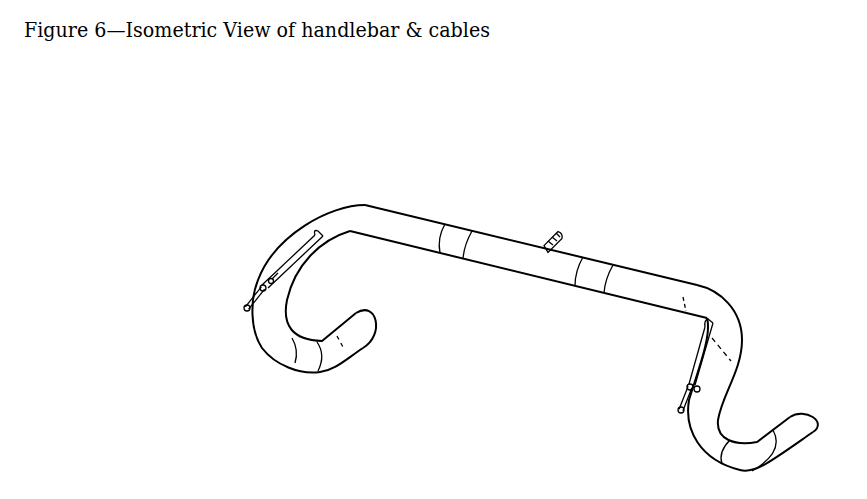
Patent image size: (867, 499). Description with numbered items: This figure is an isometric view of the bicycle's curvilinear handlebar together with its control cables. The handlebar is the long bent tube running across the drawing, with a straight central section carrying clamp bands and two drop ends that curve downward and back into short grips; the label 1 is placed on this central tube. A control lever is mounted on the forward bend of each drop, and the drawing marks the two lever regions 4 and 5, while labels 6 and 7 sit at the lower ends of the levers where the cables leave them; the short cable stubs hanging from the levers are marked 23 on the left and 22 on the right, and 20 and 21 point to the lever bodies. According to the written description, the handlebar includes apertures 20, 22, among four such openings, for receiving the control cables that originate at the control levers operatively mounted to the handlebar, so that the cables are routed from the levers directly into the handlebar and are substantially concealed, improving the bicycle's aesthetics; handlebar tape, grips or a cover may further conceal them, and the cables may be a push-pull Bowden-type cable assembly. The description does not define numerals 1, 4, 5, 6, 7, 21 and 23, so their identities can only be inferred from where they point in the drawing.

The handlebar 1 is at (396, 201).
The first brake lever 4 is at (311, 210).
The second brake lever 5 is at (701, 307).
The first lever pivot 6 is at (245, 284).
The second lever pivot 7 is at (711, 381).
The aperture 20 is at (281, 250).
The second cable anchor 21 is at (676, 379).
The aperture 22 is at (669, 417).
The first brake cable 23 is at (230, 317).